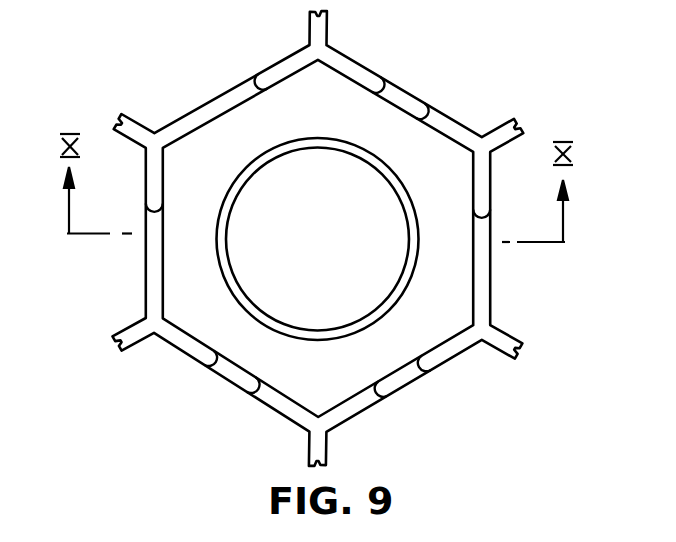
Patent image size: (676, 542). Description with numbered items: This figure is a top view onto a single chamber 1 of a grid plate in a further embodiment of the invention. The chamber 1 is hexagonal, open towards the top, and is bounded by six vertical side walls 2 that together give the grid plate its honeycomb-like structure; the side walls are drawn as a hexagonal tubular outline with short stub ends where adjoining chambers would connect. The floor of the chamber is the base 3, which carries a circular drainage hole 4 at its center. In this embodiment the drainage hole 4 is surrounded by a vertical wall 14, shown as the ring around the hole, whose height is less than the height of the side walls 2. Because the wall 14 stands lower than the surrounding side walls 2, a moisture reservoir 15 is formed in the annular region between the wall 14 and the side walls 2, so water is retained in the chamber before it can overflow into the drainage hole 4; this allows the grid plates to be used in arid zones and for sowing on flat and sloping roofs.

The chamber 1 is at (410, 348).
The side walls 2 is at (354, 71).
The base 3 is at (260, 143).
The drainage hole 4 is at (381, 178).
The vertical wall 14 is at (275, 160).
The moisture reservoir 15 is at (437, 146).